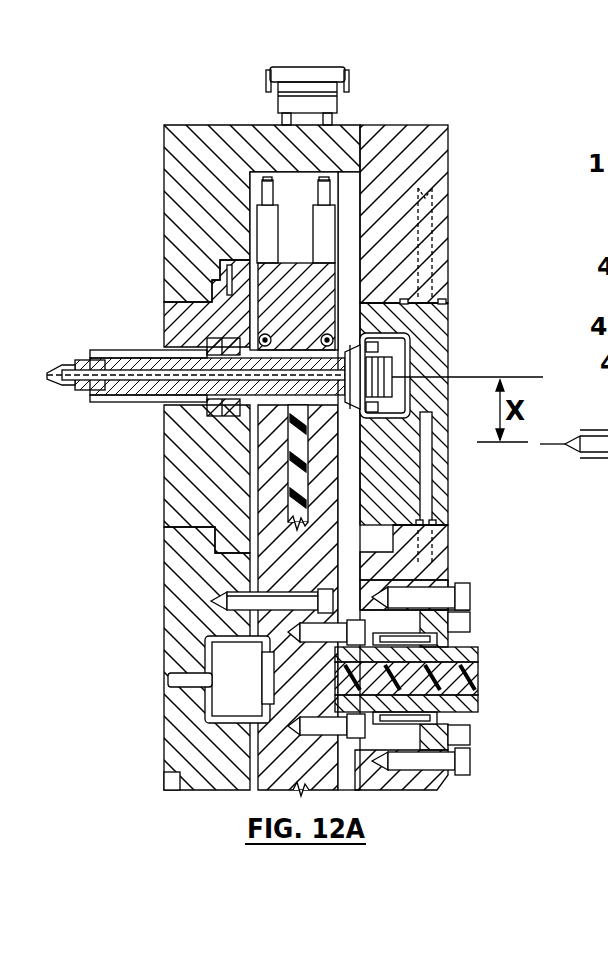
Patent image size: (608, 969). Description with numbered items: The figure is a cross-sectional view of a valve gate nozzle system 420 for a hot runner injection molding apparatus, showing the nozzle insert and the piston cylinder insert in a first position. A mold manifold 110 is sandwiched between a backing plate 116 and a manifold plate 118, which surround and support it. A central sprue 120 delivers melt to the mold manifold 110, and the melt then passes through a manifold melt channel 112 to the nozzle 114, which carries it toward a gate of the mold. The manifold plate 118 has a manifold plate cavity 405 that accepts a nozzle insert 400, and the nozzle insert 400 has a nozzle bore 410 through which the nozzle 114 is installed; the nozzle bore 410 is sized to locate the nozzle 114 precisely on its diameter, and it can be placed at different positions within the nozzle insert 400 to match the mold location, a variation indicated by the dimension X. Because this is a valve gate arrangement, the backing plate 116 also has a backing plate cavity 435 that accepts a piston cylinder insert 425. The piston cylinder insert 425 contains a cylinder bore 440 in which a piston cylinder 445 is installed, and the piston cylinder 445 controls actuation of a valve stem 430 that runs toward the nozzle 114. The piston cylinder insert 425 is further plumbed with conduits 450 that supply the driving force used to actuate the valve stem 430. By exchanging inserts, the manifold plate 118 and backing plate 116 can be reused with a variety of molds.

The mold manifold 110 is at (432, 258).
The manifold melt channel 112 is at (293, 498).
The nozzle 114 is at (150, 403).
The backing plate 116 is at (430, 157).
The manifold plate 118 is at (183, 173).
The central sprue 120 is at (495, 660).
The nozzle insert 400 is at (178, 491).
The manifold plate cavity 405 is at (187, 303).
The nozzle bore 410 is at (215, 340).
The valve gate nozzle system 420 is at (453, 108).
The piston cylinder insert 425 is at (443, 507).
The valve stem 430 is at (410, 400).
The backing plate cavity 435 is at (435, 282).
The cylinder bore 440 is at (440, 316).
The piston cylinder 445 is at (427, 370).
The conduits 450 is at (427, 337).